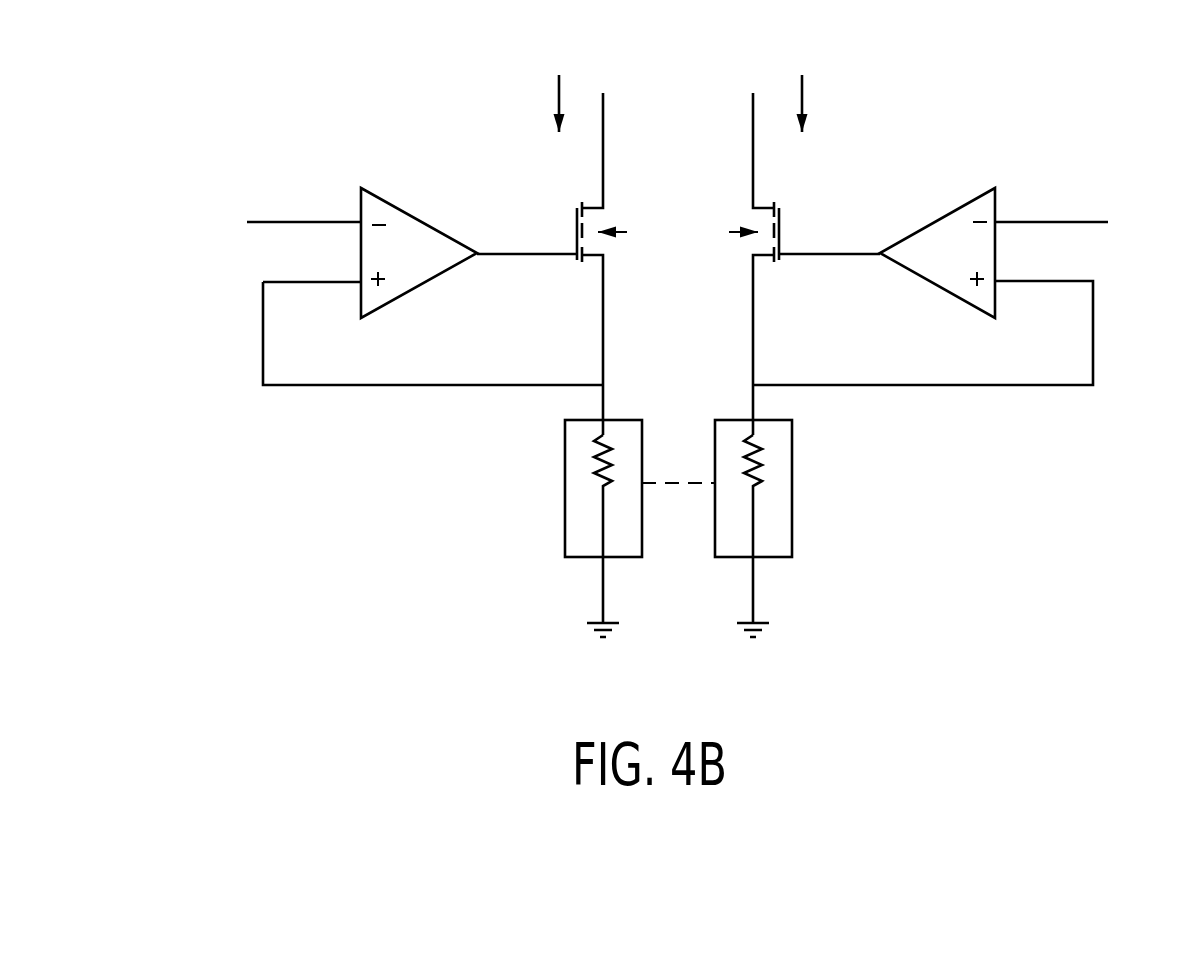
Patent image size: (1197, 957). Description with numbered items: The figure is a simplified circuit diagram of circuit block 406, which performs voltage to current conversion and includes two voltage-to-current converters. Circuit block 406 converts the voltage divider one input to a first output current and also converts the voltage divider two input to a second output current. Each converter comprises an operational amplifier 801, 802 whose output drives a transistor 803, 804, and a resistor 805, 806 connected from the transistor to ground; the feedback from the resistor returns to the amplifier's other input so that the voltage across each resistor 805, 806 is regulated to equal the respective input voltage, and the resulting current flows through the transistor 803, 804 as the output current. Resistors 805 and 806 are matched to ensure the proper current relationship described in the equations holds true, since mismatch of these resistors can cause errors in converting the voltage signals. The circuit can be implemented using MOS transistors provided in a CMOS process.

The circuit block 406 is at (1020, 72).
The operational amplifier 801 is at (392, 178).
The operational amplifier 802 is at (950, 188).
The transistor 803 is at (620, 212).
The transistor 804 is at (718, 243).
The resistor 805 is at (572, 477).
The resistor 806 is at (795, 463).